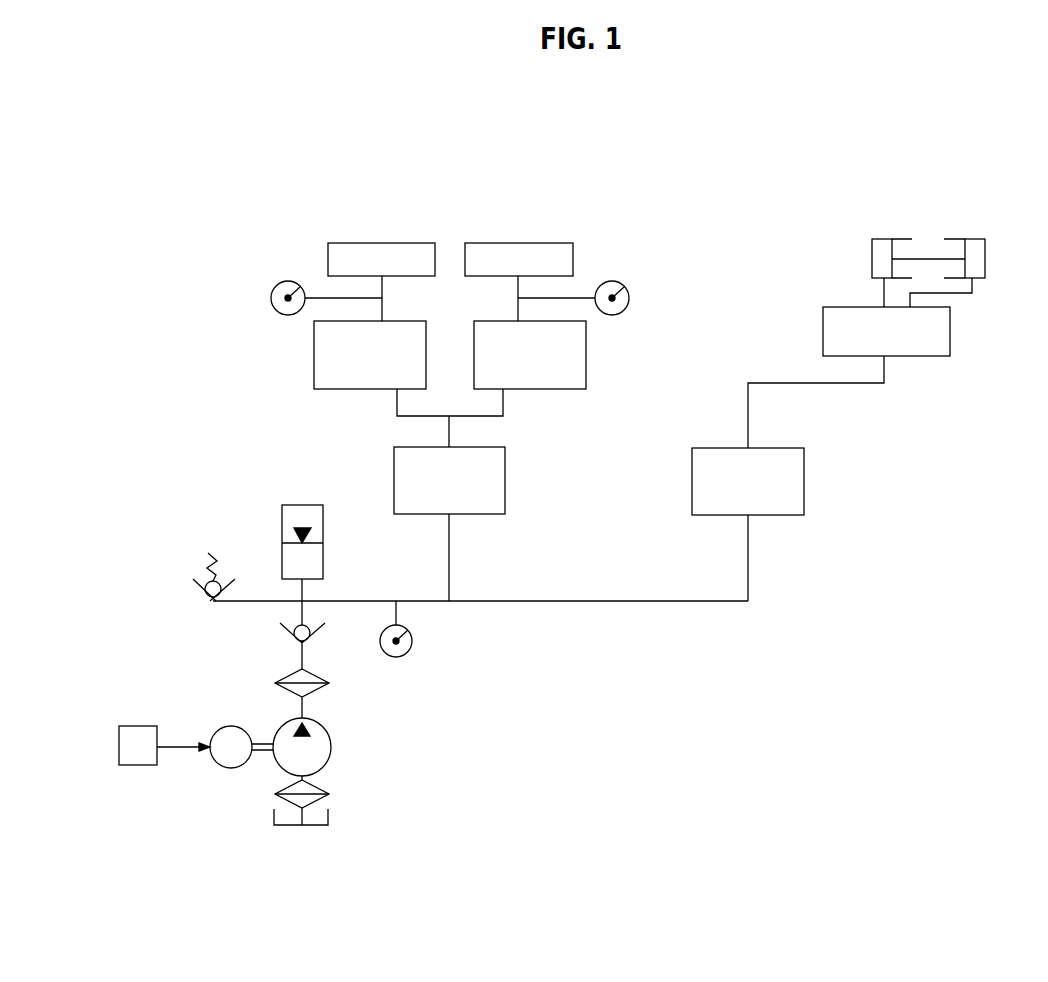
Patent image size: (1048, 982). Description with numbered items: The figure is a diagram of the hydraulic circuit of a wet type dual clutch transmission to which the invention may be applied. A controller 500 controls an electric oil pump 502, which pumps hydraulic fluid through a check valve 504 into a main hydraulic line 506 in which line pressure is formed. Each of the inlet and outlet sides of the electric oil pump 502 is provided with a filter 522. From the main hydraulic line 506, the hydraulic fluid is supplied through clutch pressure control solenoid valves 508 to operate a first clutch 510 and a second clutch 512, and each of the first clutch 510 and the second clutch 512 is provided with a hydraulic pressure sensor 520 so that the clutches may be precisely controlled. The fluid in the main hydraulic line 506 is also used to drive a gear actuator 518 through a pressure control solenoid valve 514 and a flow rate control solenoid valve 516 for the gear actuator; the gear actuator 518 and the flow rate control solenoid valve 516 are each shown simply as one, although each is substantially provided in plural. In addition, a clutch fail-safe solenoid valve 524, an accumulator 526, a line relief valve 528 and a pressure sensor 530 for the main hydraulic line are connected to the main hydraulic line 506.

The controller 500 is at (135, 726).
The electric oil pump 502 is at (331, 747).
The check valve 504 is at (292, 637).
The main hydraulic line 506 is at (641, 601).
The clutch pressure control solenoid valves 508 is at (314, 352).
The first clutch 510 is at (382, 243).
The second clutch 512 is at (518, 243).
The pressure control solenoid valve 514 is at (804, 483).
The flow rate control solenoid valve for the gear actuator 516 is at (950, 333).
The gear actuator 518 is at (972, 239).
The hydraulic pressure sensor 520 is at (288, 281).
The filter 522 is at (329, 683).
The clutch fail-safe solenoid valve 524 is at (505, 480).
The accumulator 526 is at (302, 505).
The line relief valve 528 is at (209, 594).
The pressure sensor for the main hydraulic line 530 is at (412, 641).